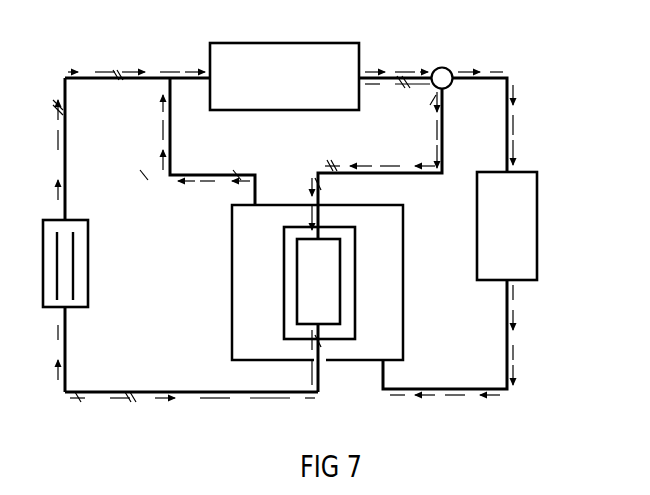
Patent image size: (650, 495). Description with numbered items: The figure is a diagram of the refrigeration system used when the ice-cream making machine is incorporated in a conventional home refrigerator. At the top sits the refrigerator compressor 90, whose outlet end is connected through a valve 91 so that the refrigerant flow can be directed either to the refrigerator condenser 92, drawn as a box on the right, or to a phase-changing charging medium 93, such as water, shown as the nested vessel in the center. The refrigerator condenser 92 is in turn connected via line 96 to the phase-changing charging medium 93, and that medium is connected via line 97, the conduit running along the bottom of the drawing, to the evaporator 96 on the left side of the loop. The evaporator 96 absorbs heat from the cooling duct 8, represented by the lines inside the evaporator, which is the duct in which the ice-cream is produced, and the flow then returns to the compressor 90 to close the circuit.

The refrigerator compressor 90 is at (310, 50).
The valve 91 is at (439, 66).
The refrigerator condenser 92 is at (537, 175).
The phase-changing charging medium 93 is at (332, 227).
The line / evaporator 96 is at (84, 247).
The cooling duct 8 is at (74, 280).
The line 97 is at (103, 394).